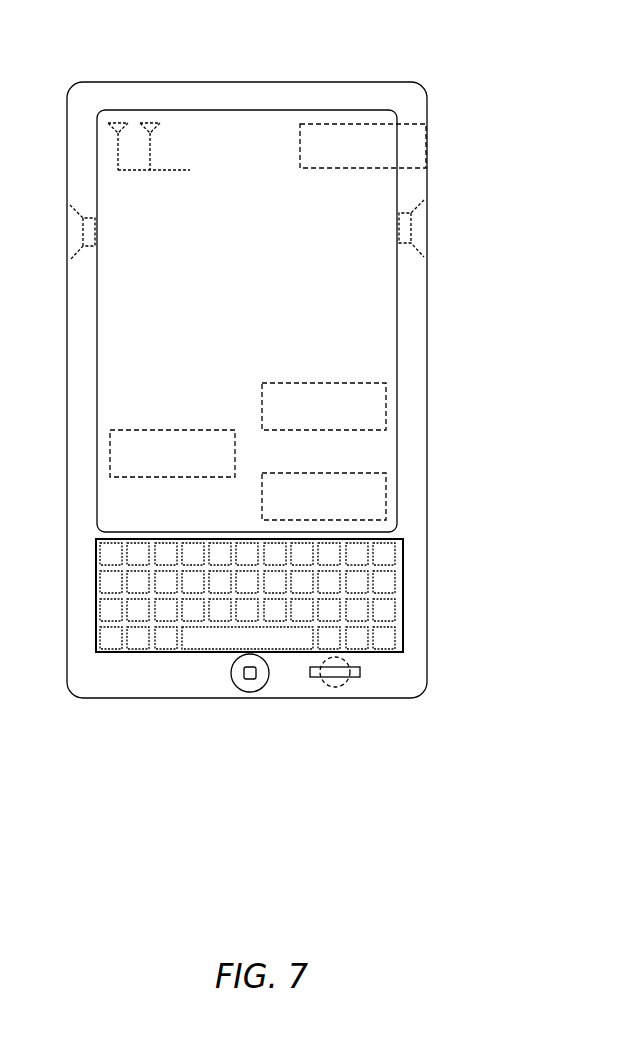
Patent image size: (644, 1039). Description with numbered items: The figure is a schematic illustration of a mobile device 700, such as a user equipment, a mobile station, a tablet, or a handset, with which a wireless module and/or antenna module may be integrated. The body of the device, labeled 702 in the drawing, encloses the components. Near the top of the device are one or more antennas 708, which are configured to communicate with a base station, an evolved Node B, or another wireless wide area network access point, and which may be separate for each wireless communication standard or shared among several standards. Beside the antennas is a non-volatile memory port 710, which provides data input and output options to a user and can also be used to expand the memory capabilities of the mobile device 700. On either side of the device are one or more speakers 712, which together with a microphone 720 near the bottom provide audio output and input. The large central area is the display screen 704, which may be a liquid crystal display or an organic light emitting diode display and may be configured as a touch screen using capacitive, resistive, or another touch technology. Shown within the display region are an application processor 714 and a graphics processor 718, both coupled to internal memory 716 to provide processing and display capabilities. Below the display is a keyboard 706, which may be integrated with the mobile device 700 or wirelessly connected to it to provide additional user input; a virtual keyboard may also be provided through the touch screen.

The mobile device 700 is at (417, 30).
The mobile device housing 702 is at (243, 82).
The display screen 704 is at (382, 313).
The keyboard 706 is at (403, 593).
The antennas 708 is at (150, 128).
The non-volatile memory port 710 is at (427, 146).
The speakers 712 is at (72, 232).
The application processor 714 is at (325, 383).
The internal memory 716 is at (325, 473).
The graphics processor 718 is at (172, 430).
The microphone 720 is at (337, 688).